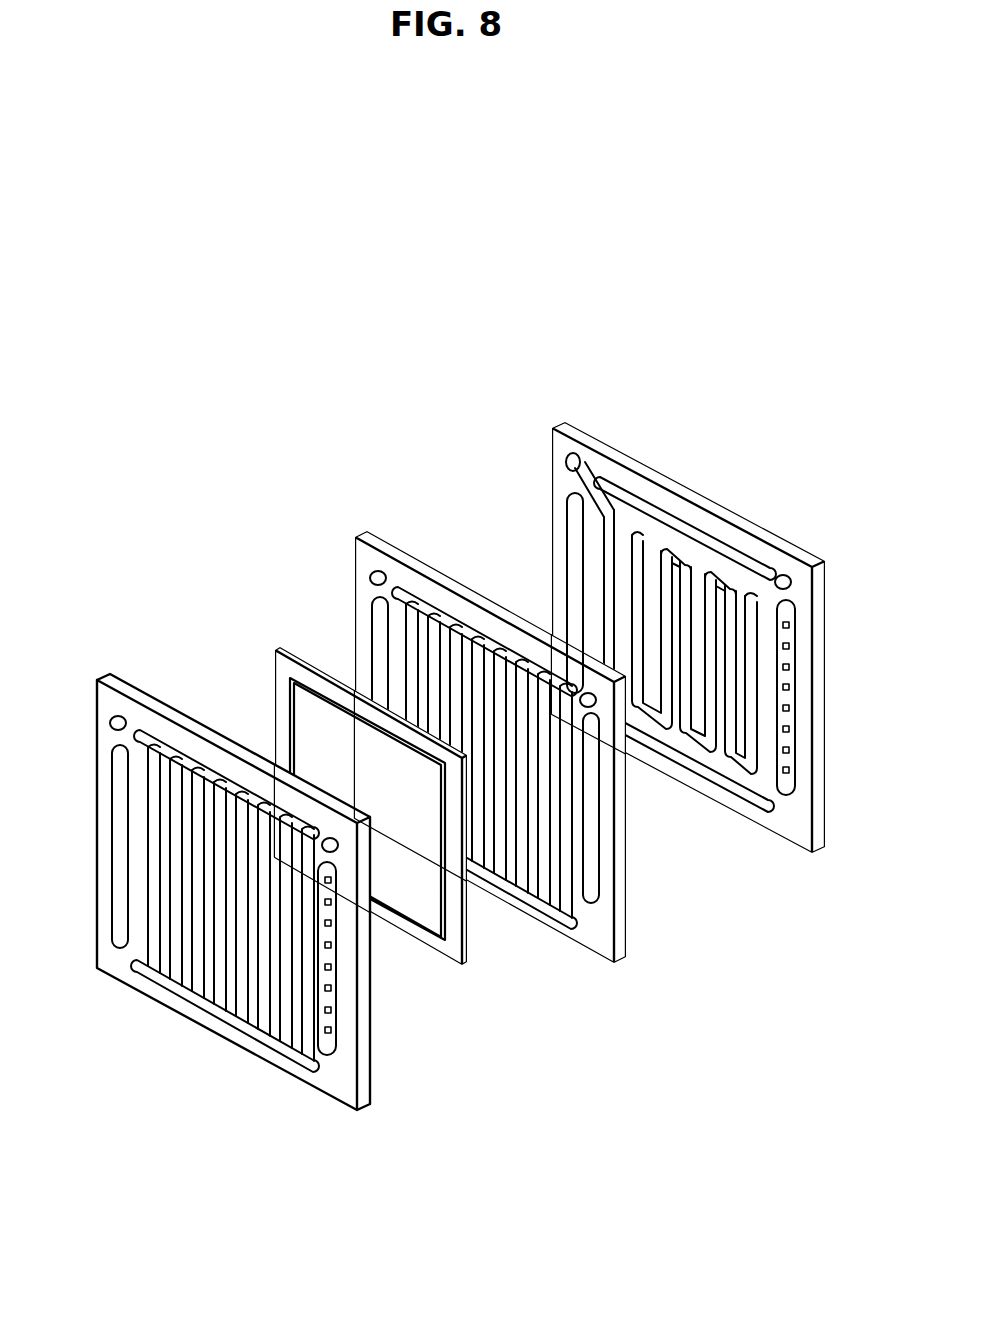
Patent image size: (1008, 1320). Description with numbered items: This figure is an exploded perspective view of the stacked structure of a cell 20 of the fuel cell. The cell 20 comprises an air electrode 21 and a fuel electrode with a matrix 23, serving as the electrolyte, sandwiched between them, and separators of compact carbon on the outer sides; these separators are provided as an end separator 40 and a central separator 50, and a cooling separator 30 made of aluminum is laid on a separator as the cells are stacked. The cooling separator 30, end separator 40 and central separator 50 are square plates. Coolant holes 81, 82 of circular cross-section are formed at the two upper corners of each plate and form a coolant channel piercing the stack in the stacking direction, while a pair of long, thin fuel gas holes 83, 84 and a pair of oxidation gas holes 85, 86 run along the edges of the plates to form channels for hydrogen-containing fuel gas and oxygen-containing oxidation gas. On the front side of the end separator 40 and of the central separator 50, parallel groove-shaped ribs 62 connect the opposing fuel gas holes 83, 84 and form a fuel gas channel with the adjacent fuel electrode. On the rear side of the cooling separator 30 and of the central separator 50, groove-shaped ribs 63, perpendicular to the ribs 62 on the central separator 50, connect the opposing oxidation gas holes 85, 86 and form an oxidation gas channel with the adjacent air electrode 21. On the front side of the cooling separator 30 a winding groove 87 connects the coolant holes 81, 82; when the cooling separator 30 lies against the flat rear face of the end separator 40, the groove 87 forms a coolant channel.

The cell 20 is at (346, 455).
The air electrode 21 is at (297, 702).
The matrix 23 is at (290, 650).
The cooling separator 30 is at (580, 434).
The end separator 40 is at (369, 535).
The central separator 50 is at (108, 679).
The rib 62 is at (523, 878).
The rib 63 is at (792, 745).
The coolant hole 81 is at (565, 462).
The coolant hole 82 is at (797, 585).
The fuel gas hole 83 is at (688, 497).
The fuel gas hole 84 is at (727, 782).
The oxidation gas hole 85 is at (573, 530).
The oxidation gas hole 86 is at (797, 715).
The groove 87 is at (670, 557).